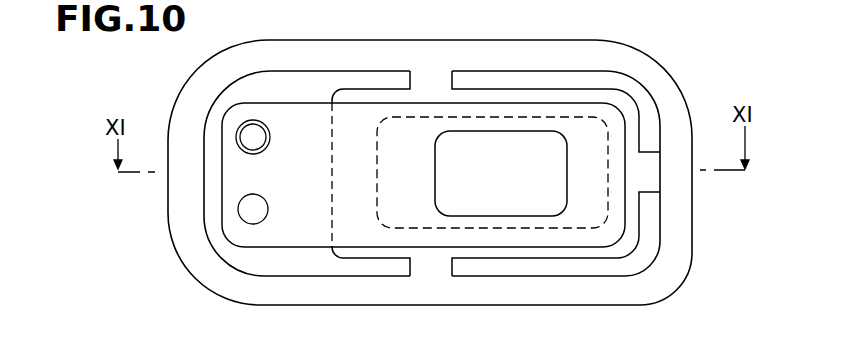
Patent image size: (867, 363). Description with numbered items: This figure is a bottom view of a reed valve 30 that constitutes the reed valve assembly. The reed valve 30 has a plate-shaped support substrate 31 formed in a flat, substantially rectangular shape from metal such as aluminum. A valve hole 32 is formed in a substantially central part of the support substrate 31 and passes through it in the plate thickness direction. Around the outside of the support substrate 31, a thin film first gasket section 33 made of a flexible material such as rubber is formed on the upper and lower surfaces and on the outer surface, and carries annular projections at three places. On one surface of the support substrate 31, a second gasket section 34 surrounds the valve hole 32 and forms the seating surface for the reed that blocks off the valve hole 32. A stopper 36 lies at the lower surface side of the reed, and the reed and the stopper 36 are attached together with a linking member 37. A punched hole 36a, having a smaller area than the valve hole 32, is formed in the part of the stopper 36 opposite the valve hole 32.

The reed valve 30 is at (678, 55).
The support substrate 31 is at (317, 83).
The valve hole 32 is at (592, 110).
The first gasket section 33 is at (677, 252).
The second gasket section 34 is at (497, 250).
The stopper 36 is at (297, 223).
The punched hole 36a is at (566, 193).
The linking member 37 is at (249, 133).